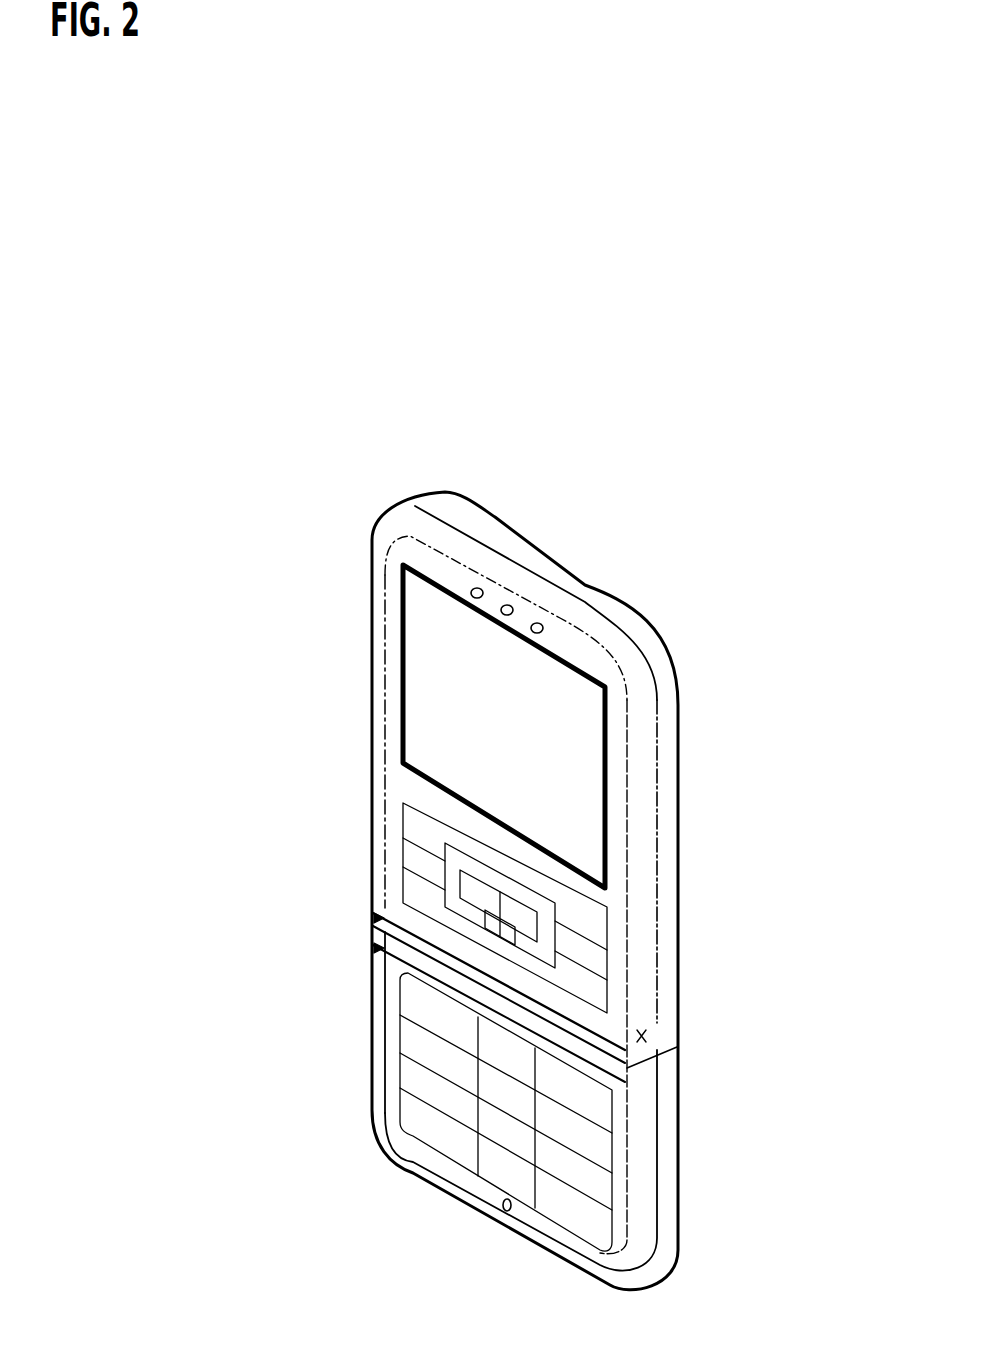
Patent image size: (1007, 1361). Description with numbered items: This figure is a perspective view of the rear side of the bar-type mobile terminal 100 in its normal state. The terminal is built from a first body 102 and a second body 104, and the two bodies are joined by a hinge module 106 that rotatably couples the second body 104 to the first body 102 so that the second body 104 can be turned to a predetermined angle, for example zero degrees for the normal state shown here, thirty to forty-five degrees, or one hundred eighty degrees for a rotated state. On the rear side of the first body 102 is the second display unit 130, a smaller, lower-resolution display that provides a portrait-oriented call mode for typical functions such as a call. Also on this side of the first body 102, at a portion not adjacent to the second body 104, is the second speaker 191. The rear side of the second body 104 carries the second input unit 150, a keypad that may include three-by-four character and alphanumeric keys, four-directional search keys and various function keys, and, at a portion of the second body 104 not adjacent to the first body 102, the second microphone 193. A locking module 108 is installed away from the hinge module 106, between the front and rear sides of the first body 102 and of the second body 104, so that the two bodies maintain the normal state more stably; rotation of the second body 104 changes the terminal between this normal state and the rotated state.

The mobile terminal 100 is at (656, 498).
The first body 102 is at (372, 744).
The second body 104 is at (372, 1029).
The hinge module 106 is at (658, 1024).
The locking module 108 is at (368, 924).
The second display unit 130 is at (588, 772).
The second input unit 150 is at (540, 952).
The second speaker 191 is at (539, 621).
The second microphone 193 is at (506, 1213).